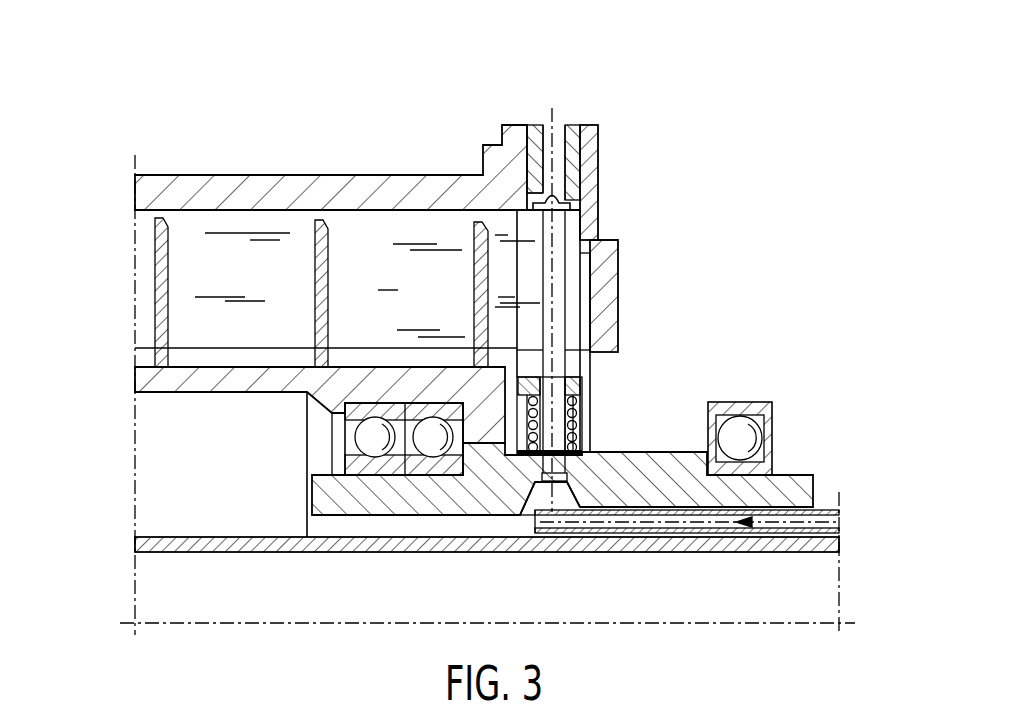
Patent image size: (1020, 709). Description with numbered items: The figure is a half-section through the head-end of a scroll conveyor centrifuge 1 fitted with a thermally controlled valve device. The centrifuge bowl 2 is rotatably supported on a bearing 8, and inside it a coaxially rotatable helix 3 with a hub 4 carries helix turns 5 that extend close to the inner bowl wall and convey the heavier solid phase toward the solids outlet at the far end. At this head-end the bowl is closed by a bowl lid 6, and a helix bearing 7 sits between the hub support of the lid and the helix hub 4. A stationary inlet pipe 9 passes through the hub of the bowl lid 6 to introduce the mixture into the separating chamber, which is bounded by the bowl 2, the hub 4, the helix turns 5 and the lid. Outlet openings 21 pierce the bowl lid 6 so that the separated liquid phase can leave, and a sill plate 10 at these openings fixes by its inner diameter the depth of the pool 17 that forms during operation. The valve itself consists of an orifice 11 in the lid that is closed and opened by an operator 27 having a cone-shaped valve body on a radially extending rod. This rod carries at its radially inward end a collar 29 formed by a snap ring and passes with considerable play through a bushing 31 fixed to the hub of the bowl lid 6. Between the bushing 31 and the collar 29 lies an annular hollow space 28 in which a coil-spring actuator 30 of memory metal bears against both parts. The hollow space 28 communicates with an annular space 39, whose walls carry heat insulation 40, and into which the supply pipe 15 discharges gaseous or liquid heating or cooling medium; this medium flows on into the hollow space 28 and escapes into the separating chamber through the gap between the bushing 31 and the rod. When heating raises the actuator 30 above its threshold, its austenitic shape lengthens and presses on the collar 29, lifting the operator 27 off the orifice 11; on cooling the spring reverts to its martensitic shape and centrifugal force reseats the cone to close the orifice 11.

The scroll conveyor centrifuge 1 is at (722, 281).
The centrifuge bowl 2 is at (337, 188).
The helix 3 is at (142, 255).
The hub 4 is at (157, 383).
The helix turns 5 is at (160, 295).
The bowl lid 6 is at (328, 498).
The helix bearing 7 is at (376, 438).
The bearing 8 is at (748, 434).
The inlet pipe 9 is at (156, 542).
The sill plate 10 is at (600, 272).
The orifice 11 is at (558, 135).
The supply pipe 15 is at (820, 517).
The pool 17 is at (402, 281).
The outlet openings 21 is at (582, 316).
The operator 27 is at (552, 232).
The annular hollow space 28 is at (576, 410).
The collar 29 is at (582, 453).
The actuator 30 is at (578, 424).
The bushing 31 is at (592, 354).
The annular space 39 is at (540, 503).
The heat insulation 40 is at (530, 500).